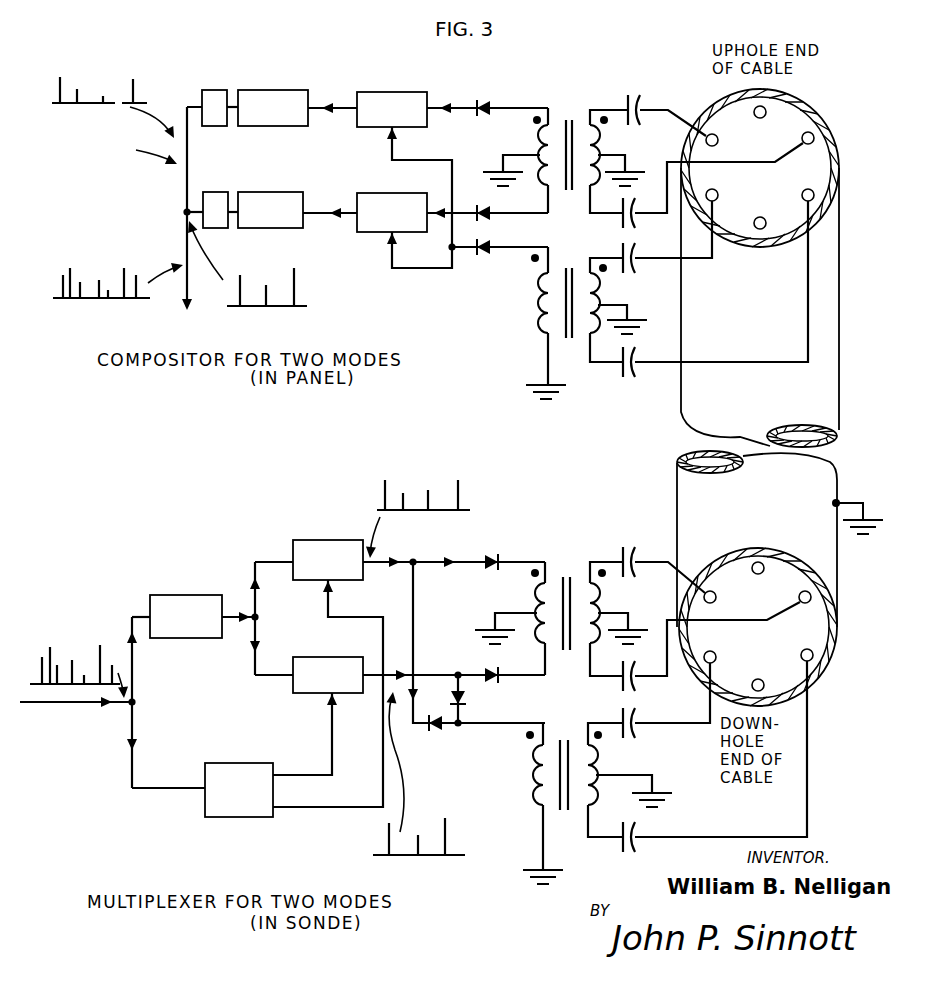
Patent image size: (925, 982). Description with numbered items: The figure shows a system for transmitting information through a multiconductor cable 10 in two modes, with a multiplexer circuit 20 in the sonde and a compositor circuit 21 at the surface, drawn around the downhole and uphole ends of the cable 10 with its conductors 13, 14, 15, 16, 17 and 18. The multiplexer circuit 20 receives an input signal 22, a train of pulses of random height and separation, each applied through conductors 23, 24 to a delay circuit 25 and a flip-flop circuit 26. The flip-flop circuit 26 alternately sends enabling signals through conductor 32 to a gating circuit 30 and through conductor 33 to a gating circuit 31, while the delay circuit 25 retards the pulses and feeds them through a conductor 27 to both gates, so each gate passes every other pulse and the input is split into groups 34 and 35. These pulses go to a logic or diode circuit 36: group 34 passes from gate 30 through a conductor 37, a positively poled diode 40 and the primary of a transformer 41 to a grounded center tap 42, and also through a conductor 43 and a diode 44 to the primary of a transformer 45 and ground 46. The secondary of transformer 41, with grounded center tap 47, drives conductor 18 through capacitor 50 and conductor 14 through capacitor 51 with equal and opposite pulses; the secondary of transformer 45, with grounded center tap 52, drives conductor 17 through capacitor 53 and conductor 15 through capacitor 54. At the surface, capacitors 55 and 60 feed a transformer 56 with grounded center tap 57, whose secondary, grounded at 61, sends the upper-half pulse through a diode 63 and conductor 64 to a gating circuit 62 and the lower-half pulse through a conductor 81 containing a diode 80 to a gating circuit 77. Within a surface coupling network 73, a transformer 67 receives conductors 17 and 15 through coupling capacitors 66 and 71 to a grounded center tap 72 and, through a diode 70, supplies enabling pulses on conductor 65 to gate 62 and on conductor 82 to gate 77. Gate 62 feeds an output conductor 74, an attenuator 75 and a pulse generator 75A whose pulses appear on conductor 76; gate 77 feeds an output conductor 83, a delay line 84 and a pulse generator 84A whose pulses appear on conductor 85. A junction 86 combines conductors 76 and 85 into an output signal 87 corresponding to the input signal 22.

The multiconductor cable 10 is at (810, 92).
The cable conductor 13 is at (758, 561).
The cable conductor 14 is at (813, 133).
The cable conductor 15 is at (814, 198).
The cable conductor 16 is at (762, 679).
The cable conductor 17 is at (710, 202).
The cable conductor 18 is at (711, 133).
The multiplexer circuit 20 is at (128, 610).
The compositor circuit 21 is at (145, 138).
The input signal 22 is at (70, 682).
The conductor 23 is at (135, 660).
The conductor 24 is at (135, 762).
The delay circuit 25 is at (160, 595).
The flip-flop circuit 26 is at (240, 763).
The conductor 27 is at (253, 593).
The gating circuit 30 is at (333, 540).
The gating circuit 31 is at (350, 657).
The conductor 32 is at (352, 808).
The conductor 33 is at (312, 773).
The pulse group 34 is at (90, 101).
The pulse group 35 is at (262, 307).
The logic or diode circuit 36 is at (443, 597).
The conductor 37 is at (378, 567).
The diode 40 is at (486, 555).
The transformer 41 is at (565, 578).
The grounded center tap 42 is at (492, 626).
The conductor 43 is at (415, 645).
The diode 44 is at (436, 729).
The transformer 45 is at (537, 770).
The ground 46 is at (538, 869).
The grounded center tap 47 is at (632, 626).
The capacitor 50 is at (624, 548).
The capacitor 51 is at (621, 682).
The grounded center tap 52 is at (661, 790).
The capacitor 53 is at (621, 717).
The capacitor 54 is at (622, 843).
The capacitor 55 is at (628, 96).
The transformer 56 is at (568, 118).
The grounded center tap 57 is at (629, 169).
The capacitor 60 is at (621, 220).
The ground 61 is at (511, 158).
The gating circuit 62 is at (410, 92).
The diode 63 is at (488, 102).
The conductor 64 is at (438, 106).
The conductor 65 is at (415, 160).
The capacitor 66 is at (636, 268).
The transformer 67 is at (566, 345).
The diode 70 is at (490, 252).
The capacitor 71 is at (636, 376).
The ground 72 is at (640, 318).
The decoupling network 73 is at (468, 167).
The output conductor 74 is at (317, 110).
The attenuator 75 is at (270, 91).
The pulse generator 75A is at (212, 90).
The conductor 76 is at (186, 106).
The gating circuit 77 is at (390, 193).
The diode 80 is at (492, 219).
The conductor 81 is at (450, 210).
The conductor 82 is at (405, 268).
The output conductor 83 is at (313, 212).
The delay line 84 is at (265, 192).
The pulse generator 84A is at (220, 222).
The output conductor 85 is at (194, 211).
The junction 86 is at (186, 211).
The output signal 87 is at (92, 300).